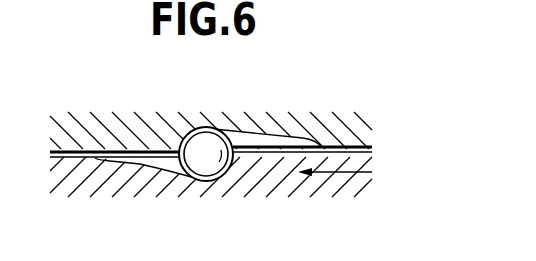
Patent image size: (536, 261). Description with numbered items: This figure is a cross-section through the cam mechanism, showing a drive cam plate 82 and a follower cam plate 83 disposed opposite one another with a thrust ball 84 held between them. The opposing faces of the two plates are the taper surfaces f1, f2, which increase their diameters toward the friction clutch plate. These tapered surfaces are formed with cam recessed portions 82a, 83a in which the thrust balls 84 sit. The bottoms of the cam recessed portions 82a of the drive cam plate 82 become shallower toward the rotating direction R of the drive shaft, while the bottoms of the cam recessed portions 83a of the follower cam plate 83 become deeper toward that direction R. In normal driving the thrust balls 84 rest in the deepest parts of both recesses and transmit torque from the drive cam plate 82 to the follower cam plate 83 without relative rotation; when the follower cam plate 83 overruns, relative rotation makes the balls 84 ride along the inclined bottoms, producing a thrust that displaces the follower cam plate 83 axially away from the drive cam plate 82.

The drive cam plate 82 is at (268, 180).
The cam recessed portions 82a is at (152, 170).
The follower cam plate 83 is at (329, 126).
The cam recessed portions 83a is at (277, 136).
The thrust balls 84 is at (206, 138).
The taper surface f1 is at (81, 158).
The taper surface f2 is at (134, 151).
The rotating direction R is at (335, 174).